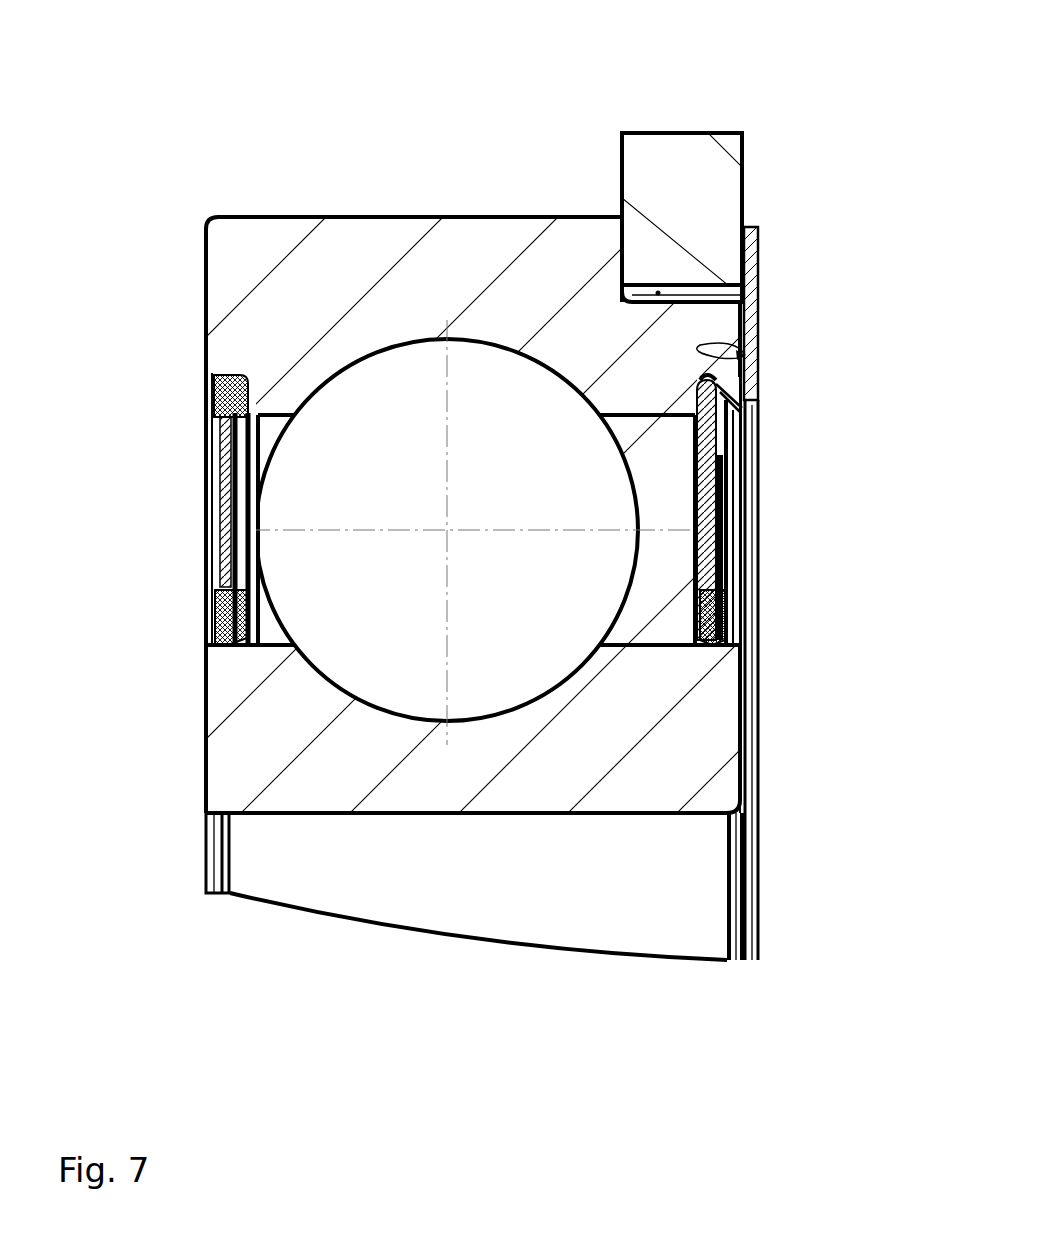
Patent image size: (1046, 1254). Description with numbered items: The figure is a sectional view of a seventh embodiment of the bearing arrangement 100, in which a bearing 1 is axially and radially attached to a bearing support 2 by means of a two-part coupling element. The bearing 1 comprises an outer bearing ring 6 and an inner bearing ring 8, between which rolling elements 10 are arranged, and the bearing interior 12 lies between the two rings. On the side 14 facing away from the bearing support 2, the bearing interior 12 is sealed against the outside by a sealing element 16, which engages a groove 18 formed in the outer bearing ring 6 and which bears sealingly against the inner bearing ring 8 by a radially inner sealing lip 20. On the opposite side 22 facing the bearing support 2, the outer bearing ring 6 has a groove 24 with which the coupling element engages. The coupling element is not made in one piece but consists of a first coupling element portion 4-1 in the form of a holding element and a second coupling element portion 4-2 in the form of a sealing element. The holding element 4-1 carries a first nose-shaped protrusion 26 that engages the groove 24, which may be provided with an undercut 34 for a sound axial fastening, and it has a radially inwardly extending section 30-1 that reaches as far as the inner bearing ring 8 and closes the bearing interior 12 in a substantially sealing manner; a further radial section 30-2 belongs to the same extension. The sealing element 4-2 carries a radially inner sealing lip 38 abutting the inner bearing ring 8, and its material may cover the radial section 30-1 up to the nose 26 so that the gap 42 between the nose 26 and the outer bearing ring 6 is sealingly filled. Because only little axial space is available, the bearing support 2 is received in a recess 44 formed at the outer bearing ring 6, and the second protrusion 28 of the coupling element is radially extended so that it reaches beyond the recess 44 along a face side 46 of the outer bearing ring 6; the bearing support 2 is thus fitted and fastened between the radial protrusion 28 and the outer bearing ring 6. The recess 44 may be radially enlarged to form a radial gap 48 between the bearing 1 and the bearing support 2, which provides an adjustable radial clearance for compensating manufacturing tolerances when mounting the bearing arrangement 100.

The bearing arrangement 100 is at (438, 41).
The bearing 1 is at (397, 186).
The bearing support 2 is at (684, 157).
The first coupling element portion 4-1 is at (748, 377).
The second coupling element portion 4-2 is at (735, 612).
The outer bearing ring 6 is at (478, 245).
The inner bearing ring 8 is at (495, 803).
The rolling elements 10 is at (345, 630).
The bearing interior 12 is at (665, 476).
The side facing away from the bearing support 14 is at (128, 307).
The sealing element 16 is at (207, 528).
The groove 18 is at (230, 375).
The sealing lip 20 is at (208, 628).
The side facing the bearing support 22 is at (896, 275).
The groove 24 is at (705, 372).
The first nose-shaped protrusion 26 is at (738, 423).
The second protrusion 28 is at (753, 322).
The radial section 30-1 is at (730, 572).
The second sealing lip 30-2 is at (730, 522).
The undercut 34 is at (745, 406).
The sealing lip 38 is at (725, 650).
The gap 42 is at (695, 393).
The recess 44 is at (658, 293).
The face side 46 is at (745, 355).
The radial gap 48 is at (712, 295).